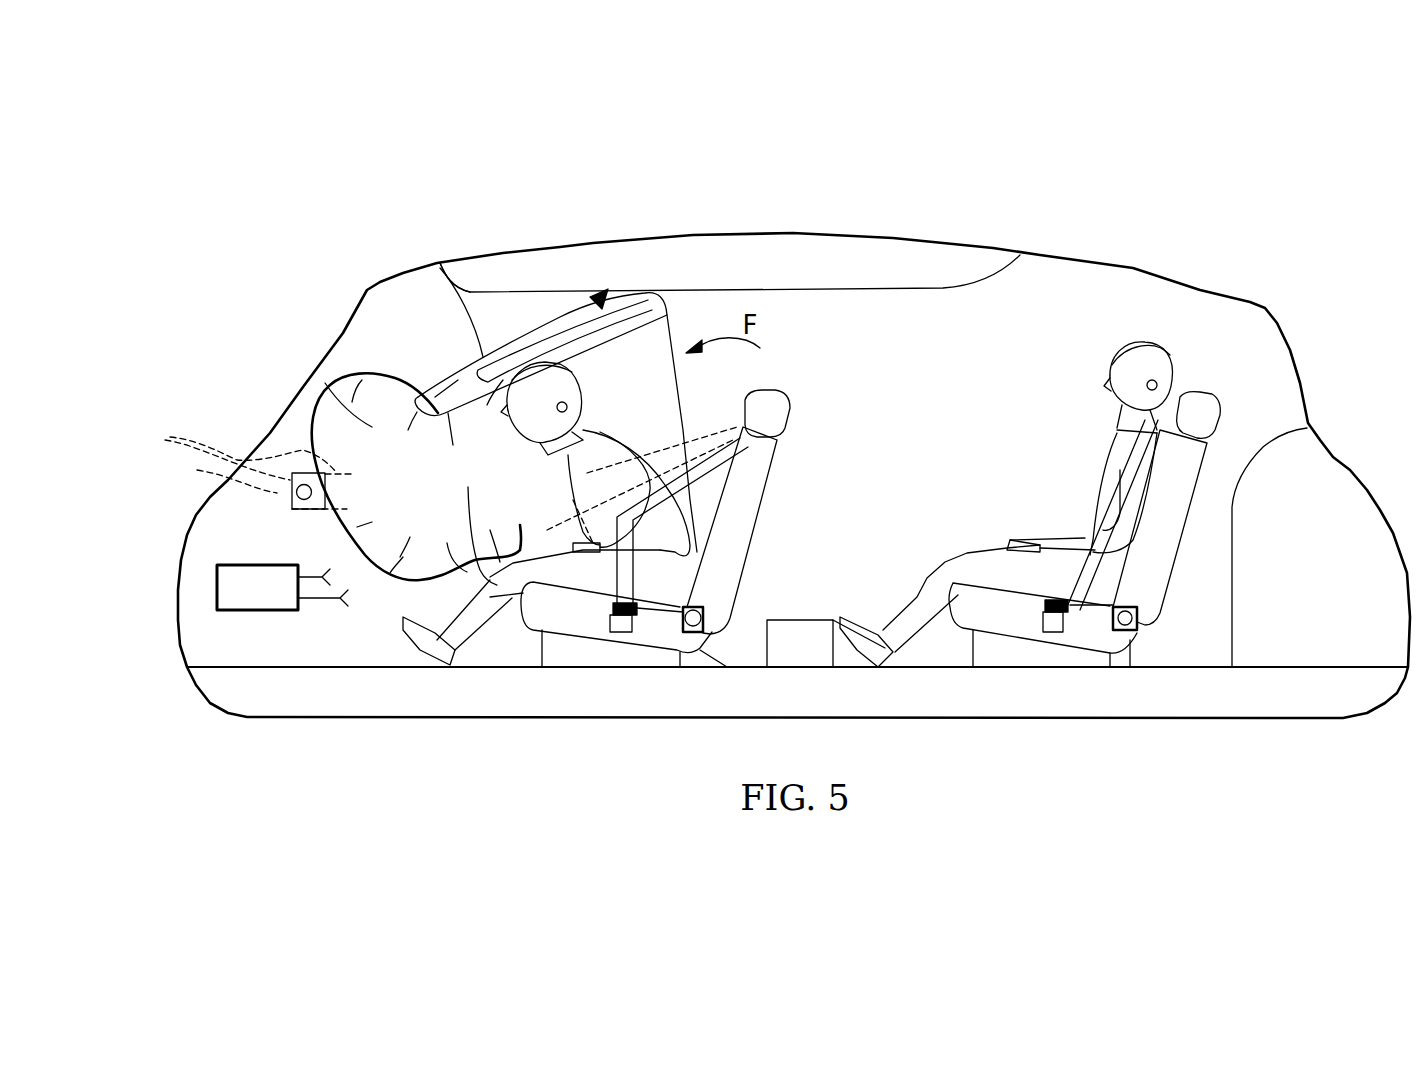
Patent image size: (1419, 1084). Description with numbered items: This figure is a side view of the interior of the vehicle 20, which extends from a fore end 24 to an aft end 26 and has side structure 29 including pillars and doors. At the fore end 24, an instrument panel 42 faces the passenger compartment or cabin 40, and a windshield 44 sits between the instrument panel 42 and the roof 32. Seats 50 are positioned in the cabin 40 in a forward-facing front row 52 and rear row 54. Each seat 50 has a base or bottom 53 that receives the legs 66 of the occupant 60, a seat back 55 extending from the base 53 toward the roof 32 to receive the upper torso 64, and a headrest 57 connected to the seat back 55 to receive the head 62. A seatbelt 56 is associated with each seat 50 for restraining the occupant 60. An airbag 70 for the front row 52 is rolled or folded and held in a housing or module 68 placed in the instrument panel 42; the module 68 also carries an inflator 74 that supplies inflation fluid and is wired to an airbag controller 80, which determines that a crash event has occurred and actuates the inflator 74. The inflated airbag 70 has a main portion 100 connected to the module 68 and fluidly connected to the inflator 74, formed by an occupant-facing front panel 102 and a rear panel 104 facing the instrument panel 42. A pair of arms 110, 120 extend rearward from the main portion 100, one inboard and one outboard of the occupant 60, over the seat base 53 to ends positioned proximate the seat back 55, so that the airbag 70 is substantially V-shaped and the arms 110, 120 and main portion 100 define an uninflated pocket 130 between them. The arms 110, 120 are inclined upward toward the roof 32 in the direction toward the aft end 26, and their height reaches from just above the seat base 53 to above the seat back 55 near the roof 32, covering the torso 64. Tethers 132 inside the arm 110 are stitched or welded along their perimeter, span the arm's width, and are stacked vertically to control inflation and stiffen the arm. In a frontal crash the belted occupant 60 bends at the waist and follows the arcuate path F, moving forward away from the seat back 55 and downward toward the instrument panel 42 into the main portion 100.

The vehicle 20 is at (1066, 238).
The first or fore end 24 is at (222, 440).
The second or aft end 26 is at (1332, 428).
The side structure 29 is at (939, 361).
The roof 32 is at (777, 233).
The passenger compartment or cabin 40 is at (1066, 314).
The instrument panel 42 is at (270, 450).
The windshield or windscreen 44 is at (343, 333).
The seat 50 is at (700, 650).
The front row 52 is at (713, 668).
The seat base or bottom 53 is at (643, 632).
The rear row 54 is at (1167, 624).
The seat back 55 is at (748, 512).
The seatbelt 56 is at (757, 396).
The headrest 57 is at (790, 418).
The occupant 60 is at (715, 557).
The head 62 is at (577, 372).
The upper torso 64 is at (777, 444).
The legs 66 is at (560, 575).
The housing/module 68 is at (257, 481).
The airbag 70 is at (397, 368).
The inflator 74 is at (292, 512).
The airbag controller 80 is at (247, 612).
The main portion 100 is at (327, 374).
The front or occupant facing panel 102 is at (450, 262).
The rear panel 104 is at (202, 451).
The arm 110 is at (480, 573).
The arm 120 is at (540, 325).
The uninflated volume or pocket 130 is at (600, 295).
The tethers 132 is at (580, 392).